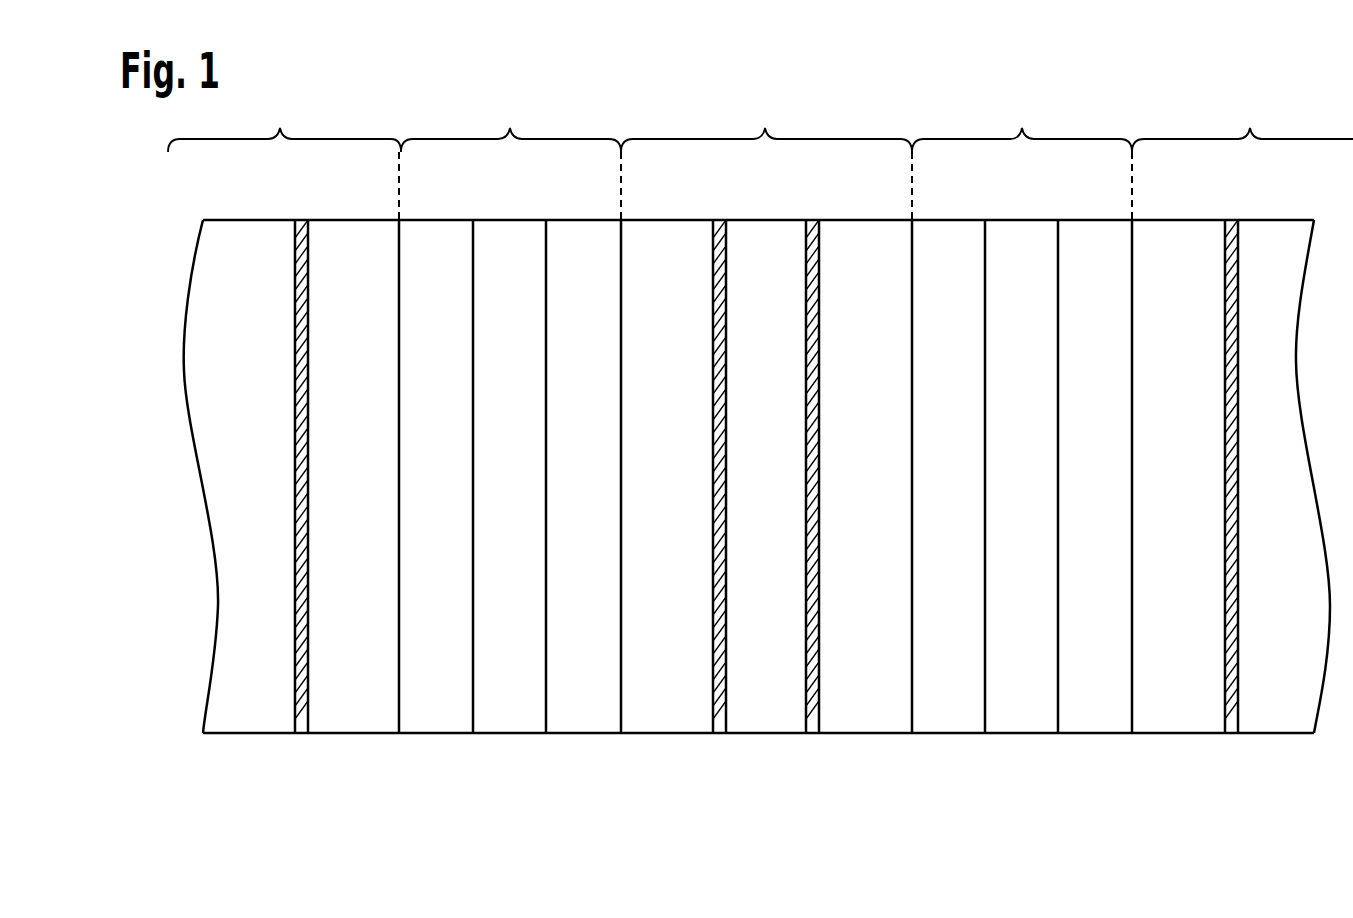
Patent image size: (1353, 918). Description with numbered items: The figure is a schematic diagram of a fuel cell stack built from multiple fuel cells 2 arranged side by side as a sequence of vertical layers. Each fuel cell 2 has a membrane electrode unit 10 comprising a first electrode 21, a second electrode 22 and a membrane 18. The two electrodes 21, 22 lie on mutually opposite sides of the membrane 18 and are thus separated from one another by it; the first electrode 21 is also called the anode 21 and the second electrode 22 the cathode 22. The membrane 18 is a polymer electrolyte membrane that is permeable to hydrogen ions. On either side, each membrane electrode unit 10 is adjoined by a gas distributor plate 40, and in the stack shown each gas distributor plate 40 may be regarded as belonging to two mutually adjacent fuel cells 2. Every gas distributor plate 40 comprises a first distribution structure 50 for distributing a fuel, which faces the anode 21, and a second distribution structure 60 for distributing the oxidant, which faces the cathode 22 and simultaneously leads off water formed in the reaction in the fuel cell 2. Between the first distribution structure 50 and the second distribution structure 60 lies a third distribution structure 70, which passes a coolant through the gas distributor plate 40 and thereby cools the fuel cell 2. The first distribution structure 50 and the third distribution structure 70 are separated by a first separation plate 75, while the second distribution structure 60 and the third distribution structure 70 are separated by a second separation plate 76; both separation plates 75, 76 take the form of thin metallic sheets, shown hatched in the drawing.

The fuel cell 2 is at (757, 537).
The membrane electrode unit 10 is at (765, 156).
The membrane 18 is at (756, 440).
The first electrode 21 is at (680, 440).
The second electrode 22 is at (828, 440).
The gas distributor plate 40 is at (760, 122).
The first distribution structure 50 is at (611, 190).
The second distribution structure 60 is at (908, 440).
The third distribution structure 70 is at (764, 190).
The first separation plate 75 is at (556, 514).
The second separation plate 76 is at (977, 514).